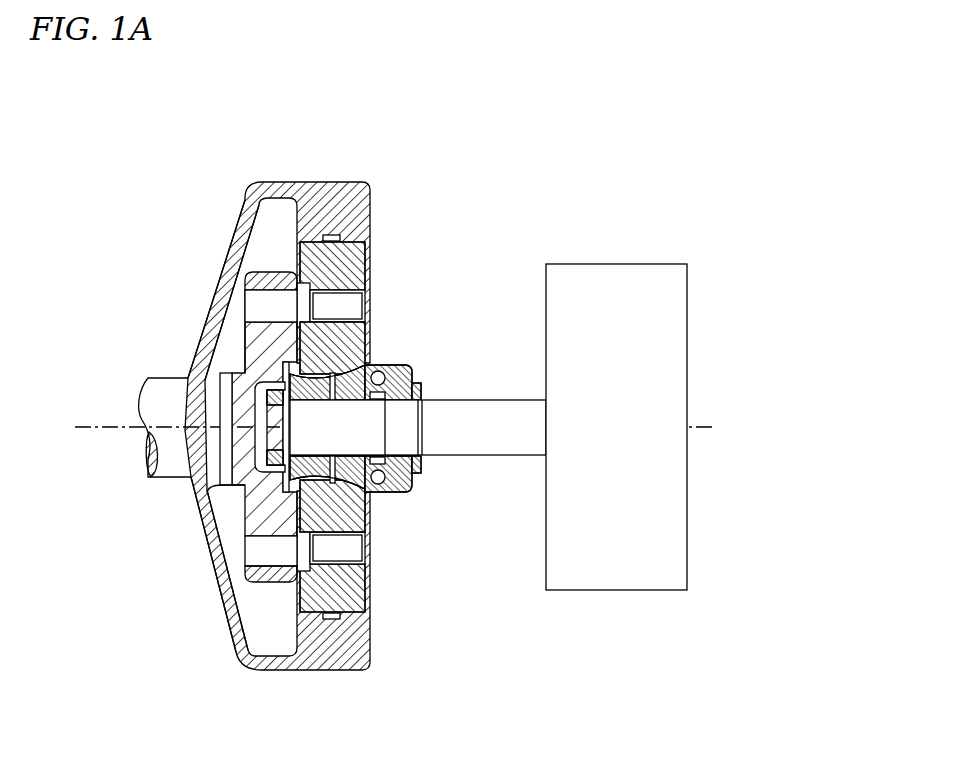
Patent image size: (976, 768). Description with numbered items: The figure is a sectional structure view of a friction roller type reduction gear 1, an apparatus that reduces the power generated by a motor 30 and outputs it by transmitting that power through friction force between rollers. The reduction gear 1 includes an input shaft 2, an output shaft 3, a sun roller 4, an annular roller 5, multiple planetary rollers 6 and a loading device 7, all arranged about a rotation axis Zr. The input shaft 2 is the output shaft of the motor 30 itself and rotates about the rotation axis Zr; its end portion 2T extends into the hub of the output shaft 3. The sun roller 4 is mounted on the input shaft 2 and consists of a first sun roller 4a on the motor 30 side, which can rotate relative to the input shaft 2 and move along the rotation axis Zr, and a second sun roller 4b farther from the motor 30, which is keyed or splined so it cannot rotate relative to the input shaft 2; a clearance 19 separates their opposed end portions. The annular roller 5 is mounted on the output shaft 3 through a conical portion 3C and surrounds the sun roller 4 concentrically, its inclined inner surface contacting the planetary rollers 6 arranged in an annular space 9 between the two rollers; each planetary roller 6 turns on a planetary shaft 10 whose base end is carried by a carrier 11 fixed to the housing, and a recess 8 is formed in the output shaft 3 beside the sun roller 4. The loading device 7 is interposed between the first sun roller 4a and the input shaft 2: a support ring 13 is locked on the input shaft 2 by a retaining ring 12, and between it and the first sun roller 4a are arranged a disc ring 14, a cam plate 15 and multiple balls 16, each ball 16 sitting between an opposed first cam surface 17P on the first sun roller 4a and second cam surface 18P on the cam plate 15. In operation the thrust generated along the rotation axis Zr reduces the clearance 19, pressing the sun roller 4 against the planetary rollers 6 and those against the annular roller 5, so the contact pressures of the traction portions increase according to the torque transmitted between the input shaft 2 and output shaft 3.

The friction roller type reduction gear 1 is at (213, 125).
The input shaft 2 is at (492, 456).
The shaft tip 2T is at (267, 411).
The output shaft 3 is at (170, 378).
The conical flange 3C is at (222, 257).
The sun roller 4 is at (163, 519).
The first sun roller 4a is at (313, 503).
The second sun roller 4b is at (300, 484).
The annular roller 5 is at (330, 182).
The planetary rollers 6 is at (345, 268).
The loading device 7 is at (455, 311).
The recess 8 is at (207, 489).
The annular space 9 is at (368, 247).
The planetary shaft 10 is at (297, 275).
The carrier 11 is at (270, 272).
The retaining ring 12 is at (422, 395).
The support ring 13 is at (422, 462).
The disc ring 14 is at (414, 372).
The cam plate 15 is at (412, 484).
The balls 16 is at (348, 470).
The first cam surface 17P is at (380, 358).
The second cam surface 18P is at (385, 372).
The clearance 19 is at (283, 378).
The motor 30 is at (600, 264).
The rotation axis Zr is at (395, 427).